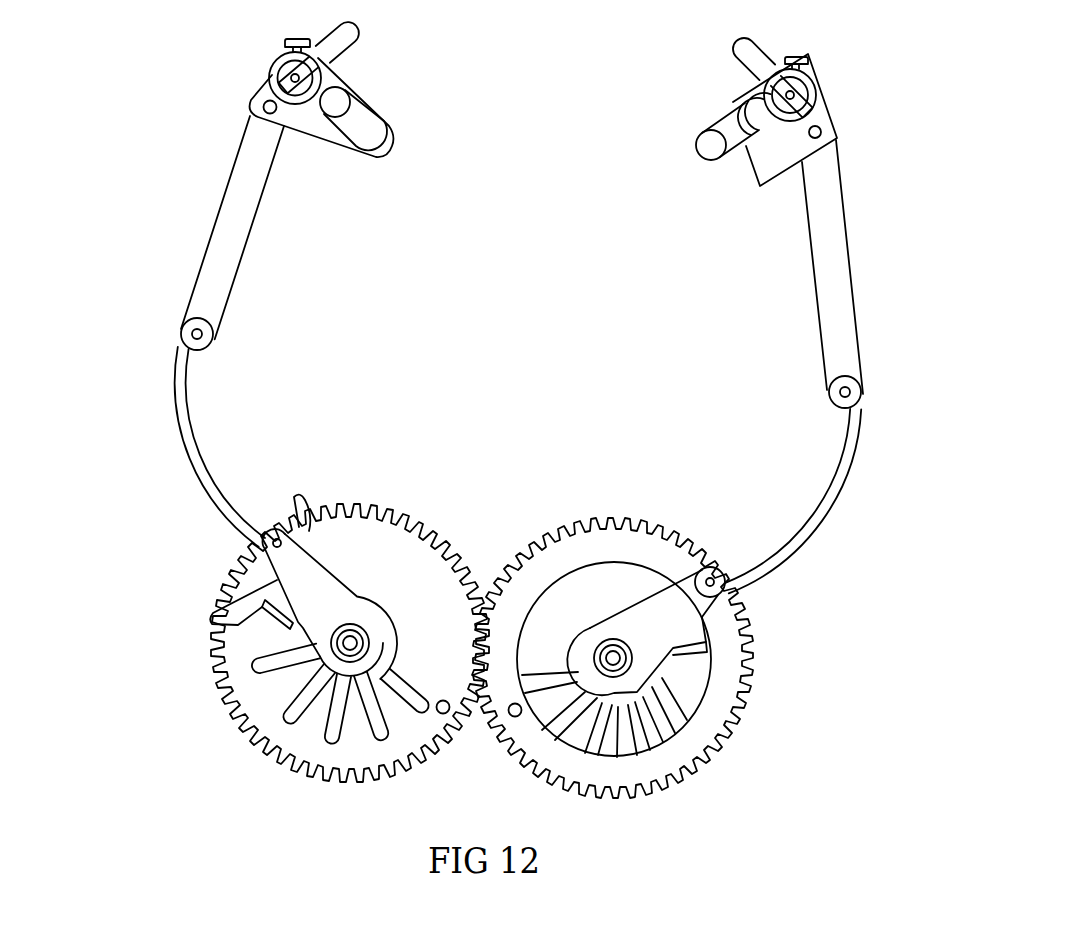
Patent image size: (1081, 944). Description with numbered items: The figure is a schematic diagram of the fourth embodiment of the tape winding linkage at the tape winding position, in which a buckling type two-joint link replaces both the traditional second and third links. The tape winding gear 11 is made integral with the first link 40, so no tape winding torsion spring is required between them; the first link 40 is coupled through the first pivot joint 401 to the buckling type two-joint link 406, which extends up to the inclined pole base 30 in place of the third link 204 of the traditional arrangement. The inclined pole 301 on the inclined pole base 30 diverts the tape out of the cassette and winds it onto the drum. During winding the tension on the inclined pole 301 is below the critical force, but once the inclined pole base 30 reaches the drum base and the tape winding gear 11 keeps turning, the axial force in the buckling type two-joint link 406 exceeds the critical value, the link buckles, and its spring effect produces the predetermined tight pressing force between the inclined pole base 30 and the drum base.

The tape winding gear 11 is at (707, 725).
The first link 40 is at (673, 622).
The first pivot joint 401 is at (713, 565).
The buckling type two-joint link 406 is at (847, 462).
The third link 204 is at (827, 233).
The inclined pole base 30 is at (770, 162).
The inclined pole 301 is at (708, 143).